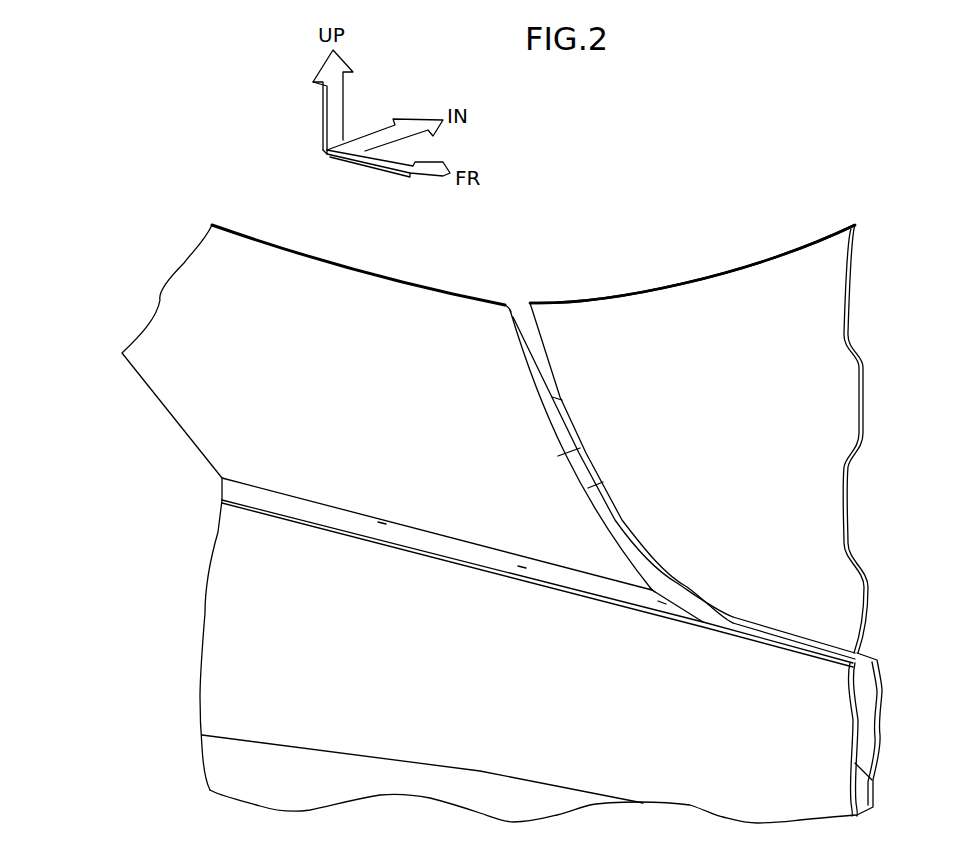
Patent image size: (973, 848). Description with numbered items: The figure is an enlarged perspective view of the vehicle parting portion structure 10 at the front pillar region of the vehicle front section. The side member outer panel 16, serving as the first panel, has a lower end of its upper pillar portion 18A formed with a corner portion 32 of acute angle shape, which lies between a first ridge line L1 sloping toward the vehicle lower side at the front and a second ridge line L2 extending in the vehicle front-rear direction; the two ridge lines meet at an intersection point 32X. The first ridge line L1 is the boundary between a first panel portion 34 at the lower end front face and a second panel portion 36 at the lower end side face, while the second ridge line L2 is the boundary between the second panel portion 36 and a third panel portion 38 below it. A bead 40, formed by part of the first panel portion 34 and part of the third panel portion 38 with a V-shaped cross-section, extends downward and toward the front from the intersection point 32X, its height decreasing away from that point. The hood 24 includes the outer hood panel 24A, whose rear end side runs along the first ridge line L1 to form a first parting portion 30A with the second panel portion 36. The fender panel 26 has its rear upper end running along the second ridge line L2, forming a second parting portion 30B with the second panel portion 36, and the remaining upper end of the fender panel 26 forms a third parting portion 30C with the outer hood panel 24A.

The vehicle parting portion structure 10 is at (869, 332).
The side member outer panel 16 is at (488, 271).
The upper pillar portion 18A is at (155, 337).
The hood 24 is at (752, 296).
The outer hood panel 24A is at (680, 303).
The fender panel 26 is at (631, 766).
The first parting portion 30A is at (578, 409).
The second parting portion 30B is at (343, 496).
The third parting portion 30C is at (783, 620).
The corner portion 32 is at (658, 584).
The intersection point 32X is at (657, 590).
The first panel portion 34 is at (604, 483).
The second panel portion 36 is at (470, 482).
The third panel portion 38 is at (522, 567).
The bead 40 is at (662, 602).
The first ridge line L1 is at (581, 448).
The second ridge line L2 is at (382, 523).